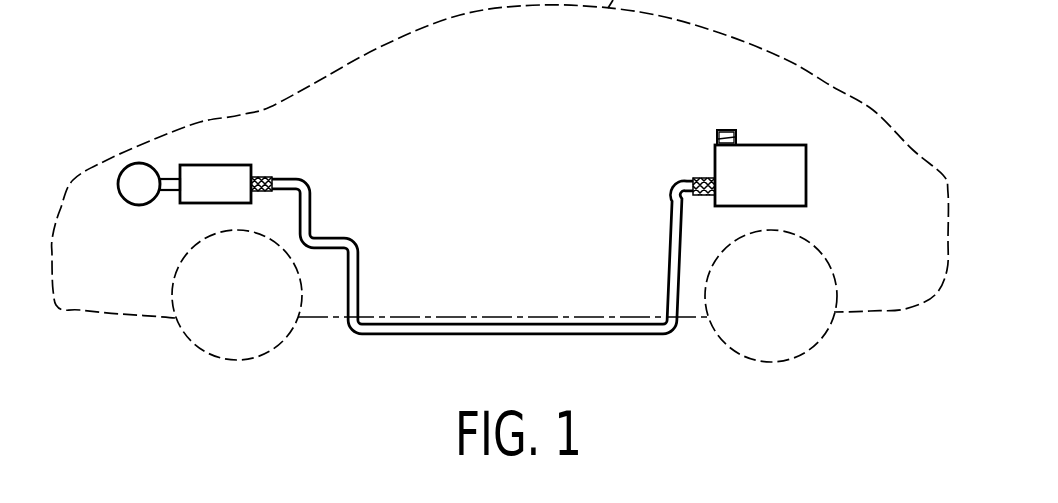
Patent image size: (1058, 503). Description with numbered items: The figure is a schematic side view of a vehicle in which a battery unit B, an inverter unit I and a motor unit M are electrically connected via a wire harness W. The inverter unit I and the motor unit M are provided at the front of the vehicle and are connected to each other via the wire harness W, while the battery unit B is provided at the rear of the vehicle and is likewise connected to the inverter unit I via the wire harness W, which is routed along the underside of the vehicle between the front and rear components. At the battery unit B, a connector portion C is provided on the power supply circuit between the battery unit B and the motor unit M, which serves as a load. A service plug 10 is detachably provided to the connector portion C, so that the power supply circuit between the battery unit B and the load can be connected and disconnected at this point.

The wire harness W is at (168, 178).
The motor unit M is at (139, 184).
The inverter unit I is at (215, 165).
The battery unit B is at (760, 145).
The connector portion C is at (717, 139).
The service plug 10 is at (728, 130).